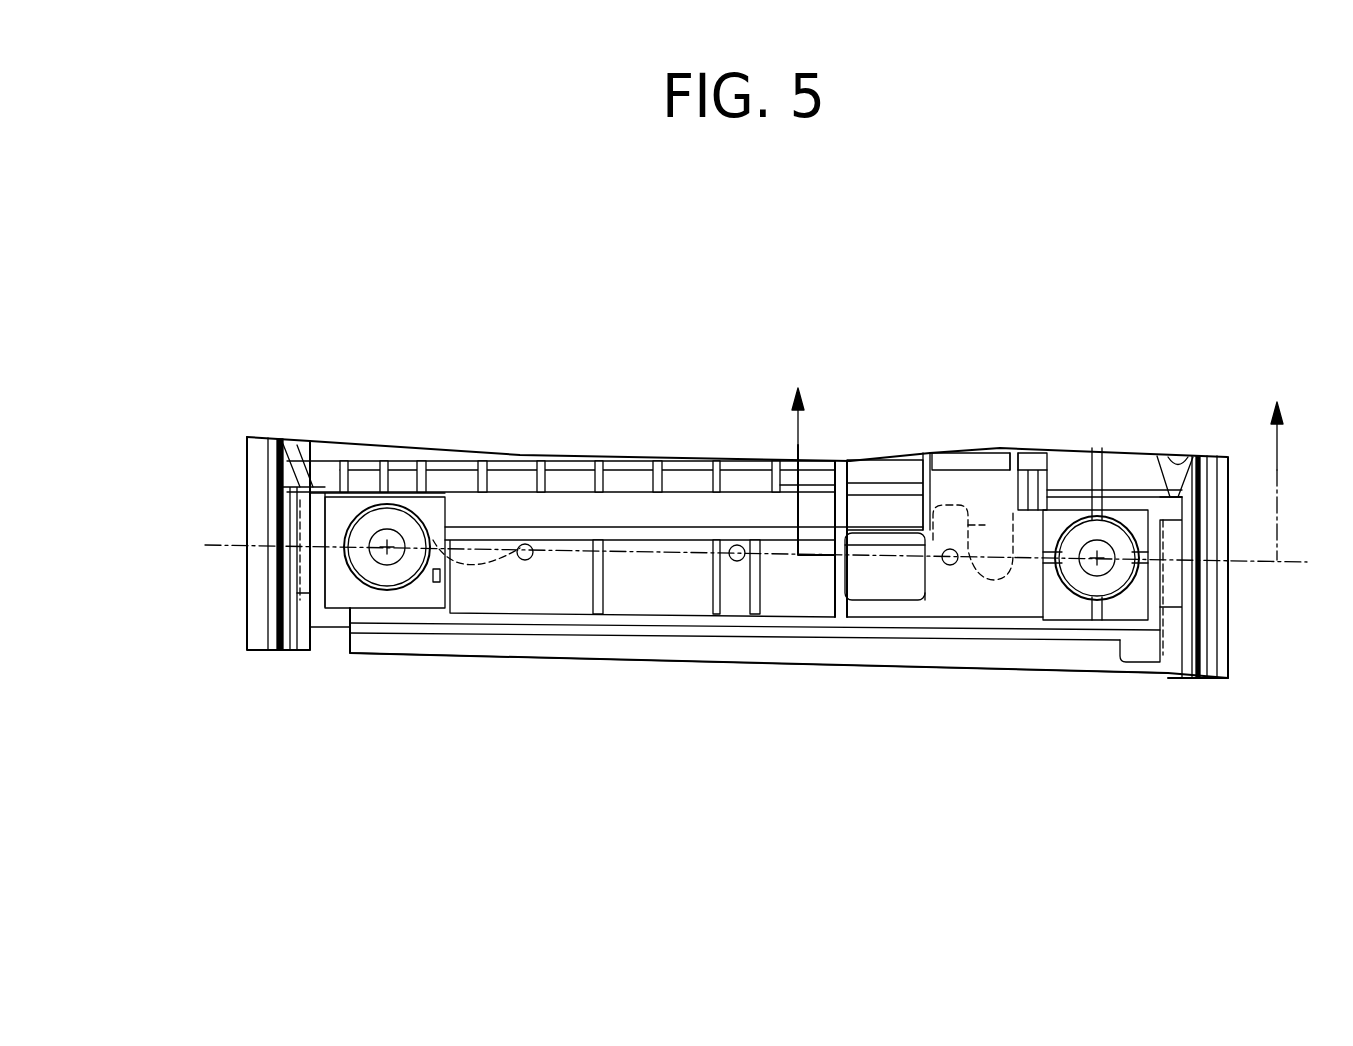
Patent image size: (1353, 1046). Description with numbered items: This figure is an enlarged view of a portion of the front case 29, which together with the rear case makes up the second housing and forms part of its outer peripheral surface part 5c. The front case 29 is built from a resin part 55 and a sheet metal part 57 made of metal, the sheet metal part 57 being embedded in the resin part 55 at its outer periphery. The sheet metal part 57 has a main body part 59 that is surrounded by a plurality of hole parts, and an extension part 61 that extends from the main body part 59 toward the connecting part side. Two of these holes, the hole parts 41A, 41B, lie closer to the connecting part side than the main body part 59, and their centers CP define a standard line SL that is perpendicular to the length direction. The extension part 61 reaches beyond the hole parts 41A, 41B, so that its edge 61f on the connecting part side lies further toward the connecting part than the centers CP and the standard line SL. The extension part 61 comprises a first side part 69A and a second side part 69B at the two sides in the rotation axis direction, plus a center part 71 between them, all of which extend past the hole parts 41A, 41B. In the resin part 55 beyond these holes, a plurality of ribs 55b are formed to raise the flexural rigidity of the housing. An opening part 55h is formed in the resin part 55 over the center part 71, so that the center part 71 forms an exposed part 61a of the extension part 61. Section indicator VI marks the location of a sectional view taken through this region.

The front case 29 is at (258, 403).
The resin part 55 is at (262, 493).
The ribs 55b is at (388, 528).
The opening part 55h is at (907, 593).
The outer peripheral surface part 5c is at (247, 612).
The standard line SL is at (228, 552).
The centers CP is at (392, 528).
The first side part 69A is at (318, 468).
The second side part 69B is at (1192, 492).
The hole part 41A is at (415, 497).
The hole part 41B is at (1100, 532).
The extension part 61 is at (630, 545).
The exposed part 61a is at (873, 577).
The edge 61f is at (947, 505).
The center part 71 is at (973, 512).
The sheet metal part 57 is at (440, 643).
The main body part 59 is at (542, 643).
The section line VI is at (1037, 451).